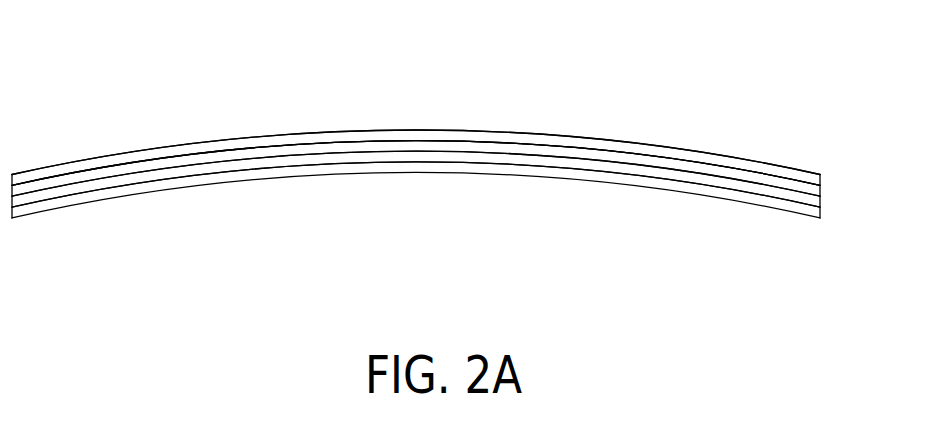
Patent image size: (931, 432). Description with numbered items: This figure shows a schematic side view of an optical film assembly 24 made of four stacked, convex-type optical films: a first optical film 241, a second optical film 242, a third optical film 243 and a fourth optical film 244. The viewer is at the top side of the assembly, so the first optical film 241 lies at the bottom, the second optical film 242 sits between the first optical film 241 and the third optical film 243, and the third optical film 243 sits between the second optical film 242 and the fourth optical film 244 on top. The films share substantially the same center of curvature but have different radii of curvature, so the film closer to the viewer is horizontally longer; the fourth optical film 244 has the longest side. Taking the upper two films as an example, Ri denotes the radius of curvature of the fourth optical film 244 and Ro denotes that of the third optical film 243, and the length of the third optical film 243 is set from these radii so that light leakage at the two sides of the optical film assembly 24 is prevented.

The optical film assembly 24 is at (452, 128).
The first optical film 241 is at (820, 211).
The second optical film 242 is at (820, 200).
The third optical film 243 is at (820, 189).
The fourth optical film 244 is at (789, 172).
The radius of curvature of the fourth optical film Ri is at (495, 119).
The radius of curvature of the third optical film Ro is at (582, 136).